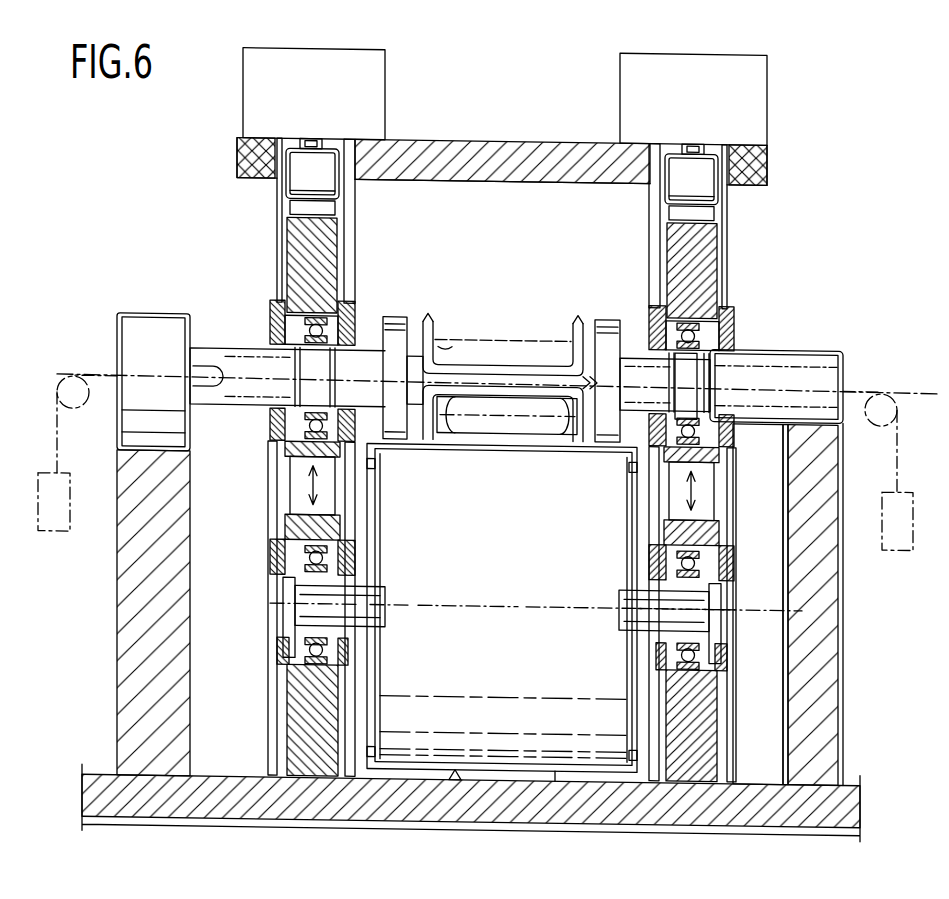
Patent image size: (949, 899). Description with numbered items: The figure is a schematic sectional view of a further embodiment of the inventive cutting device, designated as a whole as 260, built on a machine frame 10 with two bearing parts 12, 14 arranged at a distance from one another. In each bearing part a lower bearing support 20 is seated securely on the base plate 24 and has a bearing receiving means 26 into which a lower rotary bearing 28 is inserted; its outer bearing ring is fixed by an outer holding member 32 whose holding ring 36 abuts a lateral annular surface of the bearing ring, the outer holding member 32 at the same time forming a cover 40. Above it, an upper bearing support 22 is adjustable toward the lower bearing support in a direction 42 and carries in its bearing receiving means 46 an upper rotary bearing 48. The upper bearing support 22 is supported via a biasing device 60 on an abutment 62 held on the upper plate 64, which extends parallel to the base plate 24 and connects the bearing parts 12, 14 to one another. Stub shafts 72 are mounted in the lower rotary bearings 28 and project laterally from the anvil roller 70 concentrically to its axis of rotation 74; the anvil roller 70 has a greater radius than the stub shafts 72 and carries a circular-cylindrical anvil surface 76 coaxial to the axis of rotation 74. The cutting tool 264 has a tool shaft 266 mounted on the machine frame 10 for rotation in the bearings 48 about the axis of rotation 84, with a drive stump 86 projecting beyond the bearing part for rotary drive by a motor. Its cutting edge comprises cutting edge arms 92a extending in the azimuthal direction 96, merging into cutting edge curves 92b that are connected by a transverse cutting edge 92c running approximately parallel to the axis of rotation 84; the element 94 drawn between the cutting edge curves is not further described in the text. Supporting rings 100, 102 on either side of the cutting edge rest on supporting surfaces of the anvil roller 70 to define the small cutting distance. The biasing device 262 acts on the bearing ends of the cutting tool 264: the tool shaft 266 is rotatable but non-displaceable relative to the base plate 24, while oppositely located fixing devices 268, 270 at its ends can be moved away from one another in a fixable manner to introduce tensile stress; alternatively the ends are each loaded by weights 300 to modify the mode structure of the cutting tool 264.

The machine frame 10 is at (465, 105).
The bearing part 12 is at (262, 198).
The bearing part 14 is at (748, 258).
The lower bearing support 20 is at (286, 738).
The upper bearing support 22 is at (300, 250).
The base plate 24 is at (522, 810).
The bearing receiving means 26 is at (275, 554).
The lower rotary bearing 28 is at (276, 660).
The outer holding member 32 is at (274, 452).
The holding ring 36 is at (272, 692).
The cover 40 is at (280, 628).
The direction 42 is at (300, 488).
The bearing receiving means 46 is at (282, 328).
The upper rotary bearing 48 is at (272, 430).
The biasing device 60 is at (300, 166).
The abutment 62 is at (270, 90).
The upper plate 64 is at (560, 162).
The anvil roller 70 is at (456, 786).
The stub shaft 72 is at (310, 596).
The axis of rotation 74 is at (758, 606).
The anvil surface 76 is at (555, 786).
The axis of rotation 84 is at (834, 384).
The drive stump 86 is at (210, 345).
The cutting edge arm 92a is at (426, 442).
The cutting edge curve 92b is at (443, 442).
The transverse cutting edge 92c is at (490, 442).
The roller shaft 94 is at (528, 442).
The azimuthal direction 96 is at (608, 442).
The supporting ring 100 is at (390, 304).
The supporting ring 102 is at (597, 304).
The cutting device 260 is at (792, 137).
The biasing device 262 is at (846, 350).
The cutting tool 264 is at (493, 304).
The tool shaft 266 is at (714, 372).
The fixing device 268 is at (162, 332).
The fixing device 270 is at (780, 418).
The weight 300 is at (62, 540).